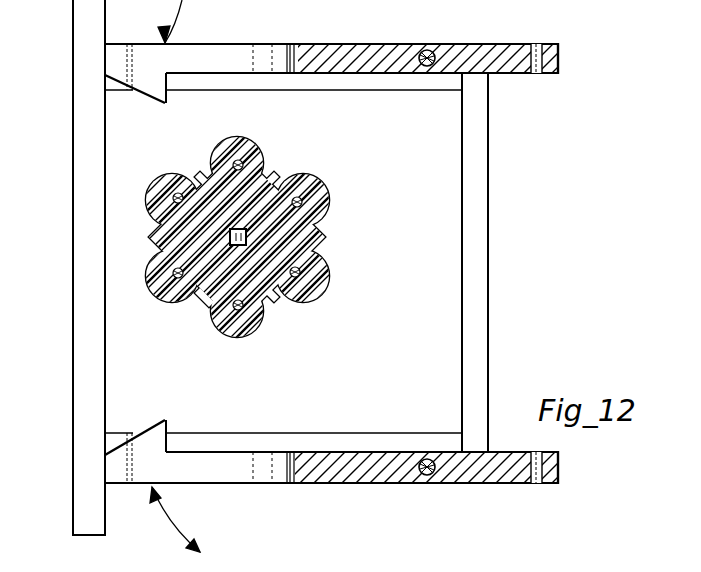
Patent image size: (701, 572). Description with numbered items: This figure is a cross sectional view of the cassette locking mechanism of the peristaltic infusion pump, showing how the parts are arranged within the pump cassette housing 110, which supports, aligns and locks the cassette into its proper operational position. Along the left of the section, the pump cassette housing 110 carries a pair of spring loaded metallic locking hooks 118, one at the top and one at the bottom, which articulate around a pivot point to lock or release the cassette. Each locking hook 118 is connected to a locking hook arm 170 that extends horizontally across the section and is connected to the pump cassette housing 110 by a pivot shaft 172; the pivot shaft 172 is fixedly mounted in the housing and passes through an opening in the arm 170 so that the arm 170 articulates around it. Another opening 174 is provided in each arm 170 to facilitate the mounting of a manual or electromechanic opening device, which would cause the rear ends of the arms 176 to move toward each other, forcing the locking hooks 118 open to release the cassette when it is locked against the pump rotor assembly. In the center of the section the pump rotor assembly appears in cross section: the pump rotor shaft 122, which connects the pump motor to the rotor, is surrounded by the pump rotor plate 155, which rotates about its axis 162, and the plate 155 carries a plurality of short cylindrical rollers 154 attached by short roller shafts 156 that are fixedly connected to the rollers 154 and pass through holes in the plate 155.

The pump cassette housing 110 is at (73, 44).
The locking hook 118 is at (156, 100).
The pump rotor shaft 122 is at (258, 225).
The roller 154 is at (274, 174).
The pump rotor plate 155 is at (318, 184).
The roller shaft 156 is at (196, 176).
The axis 162 is at (238, 228).
The locking hook arm 170 is at (318, 44).
The pivot shaft 172 is at (430, 49).
The opening 174 is at (538, 44).
The rear end of arm 176 is at (558, 59).